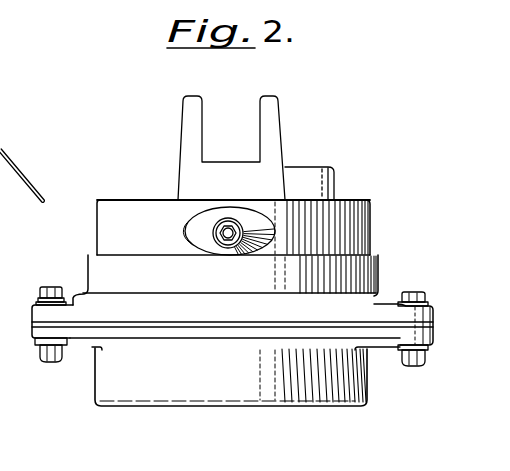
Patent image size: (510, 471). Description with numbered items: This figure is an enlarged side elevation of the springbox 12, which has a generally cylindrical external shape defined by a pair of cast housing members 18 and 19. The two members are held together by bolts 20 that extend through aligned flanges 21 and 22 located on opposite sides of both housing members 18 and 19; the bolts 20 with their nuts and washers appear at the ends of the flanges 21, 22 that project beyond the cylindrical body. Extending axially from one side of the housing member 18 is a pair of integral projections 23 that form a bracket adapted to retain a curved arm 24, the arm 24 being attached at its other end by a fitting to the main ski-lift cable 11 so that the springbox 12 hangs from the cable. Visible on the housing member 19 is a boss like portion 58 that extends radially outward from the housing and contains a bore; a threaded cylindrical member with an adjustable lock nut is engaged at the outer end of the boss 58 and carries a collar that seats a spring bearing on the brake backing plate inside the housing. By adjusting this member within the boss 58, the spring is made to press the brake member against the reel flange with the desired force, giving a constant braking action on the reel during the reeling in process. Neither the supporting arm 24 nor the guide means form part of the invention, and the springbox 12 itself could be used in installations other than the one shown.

The main ski-lift cable 11 is at (1, 144).
The springbox 12 is at (316, 410).
The housing member 18 is at (98, 277).
The housing member 19 is at (123, 398).
The bolts 20 is at (47, 363).
The flange 21 is at (34, 312).
The flange 22 is at (42, 340).
The integral projections 23 is at (277, 118).
The curved arm 24 is at (22, 179).
The boss like portion 58 is at (197, 226).